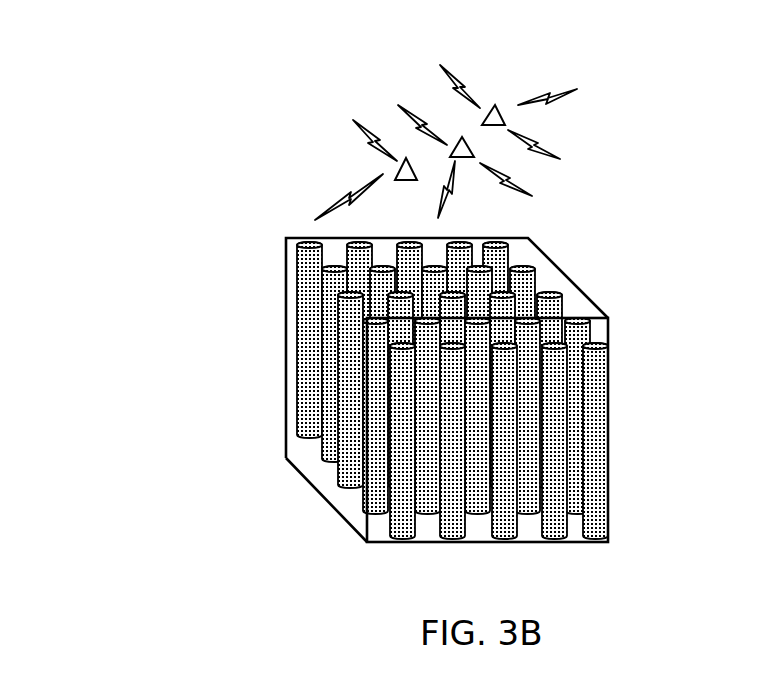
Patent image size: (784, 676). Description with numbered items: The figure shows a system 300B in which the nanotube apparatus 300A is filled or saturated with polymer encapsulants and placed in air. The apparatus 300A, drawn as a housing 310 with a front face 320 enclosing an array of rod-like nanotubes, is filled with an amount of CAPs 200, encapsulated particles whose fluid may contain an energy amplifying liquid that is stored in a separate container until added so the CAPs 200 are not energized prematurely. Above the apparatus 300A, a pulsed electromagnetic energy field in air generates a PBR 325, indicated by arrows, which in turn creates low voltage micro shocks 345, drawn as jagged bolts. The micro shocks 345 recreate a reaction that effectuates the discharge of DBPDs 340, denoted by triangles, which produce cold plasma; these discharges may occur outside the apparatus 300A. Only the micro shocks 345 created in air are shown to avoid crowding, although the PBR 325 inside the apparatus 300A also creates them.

The system 300B is at (138, 145).
The apparatus 300A is at (287, 238).
The CAPs 200 is at (298, 375).
The housing 310 is at (572, 281).
The front face of housing 320 is at (609, 333).
The PBR 325 is at (593, 143).
The DBPDs 340 is at (495, 106).
The micro shocks 345 is at (583, 88).